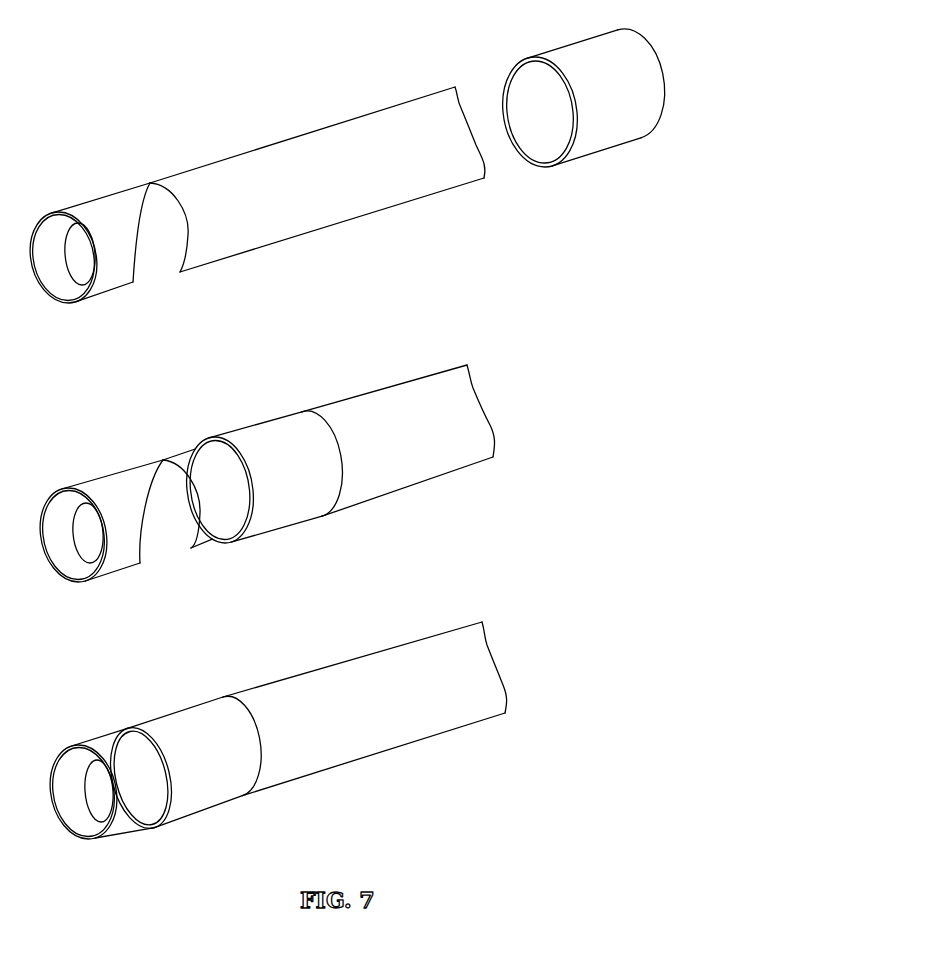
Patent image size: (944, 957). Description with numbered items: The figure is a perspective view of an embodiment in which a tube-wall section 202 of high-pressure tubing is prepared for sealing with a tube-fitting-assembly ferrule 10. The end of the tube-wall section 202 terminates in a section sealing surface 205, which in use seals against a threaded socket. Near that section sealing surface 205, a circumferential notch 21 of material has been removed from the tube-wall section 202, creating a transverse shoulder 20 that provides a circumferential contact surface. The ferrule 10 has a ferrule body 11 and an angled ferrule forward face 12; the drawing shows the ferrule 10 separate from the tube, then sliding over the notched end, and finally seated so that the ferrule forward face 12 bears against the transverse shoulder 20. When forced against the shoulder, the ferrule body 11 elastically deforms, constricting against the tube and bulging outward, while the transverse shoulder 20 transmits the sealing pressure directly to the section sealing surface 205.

The tube-fitting-assembly ferrule 10 is at (388, 420).
The ferrule body 11 is at (588, 43).
The ferrule forward face 12 is at (513, 72).
The transverse shoulder 20 is at (106, 196).
The circumferential notch 21 is at (134, 282).
The tube-wall section 202 is at (413, 187).
The section sealing surface 205 is at (63, 282).